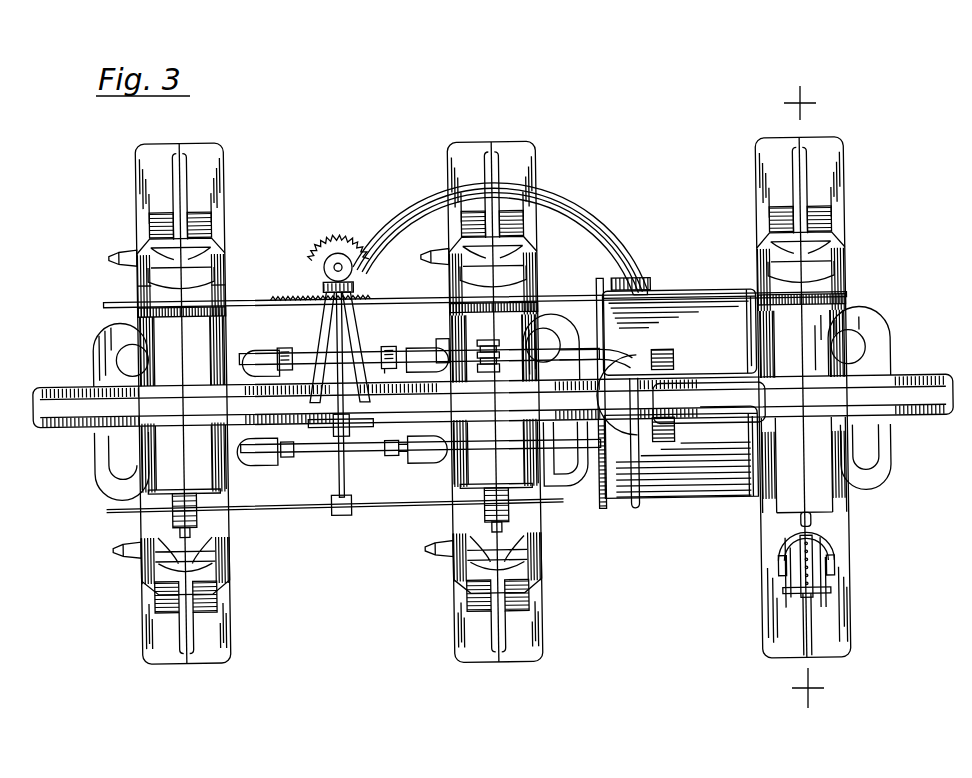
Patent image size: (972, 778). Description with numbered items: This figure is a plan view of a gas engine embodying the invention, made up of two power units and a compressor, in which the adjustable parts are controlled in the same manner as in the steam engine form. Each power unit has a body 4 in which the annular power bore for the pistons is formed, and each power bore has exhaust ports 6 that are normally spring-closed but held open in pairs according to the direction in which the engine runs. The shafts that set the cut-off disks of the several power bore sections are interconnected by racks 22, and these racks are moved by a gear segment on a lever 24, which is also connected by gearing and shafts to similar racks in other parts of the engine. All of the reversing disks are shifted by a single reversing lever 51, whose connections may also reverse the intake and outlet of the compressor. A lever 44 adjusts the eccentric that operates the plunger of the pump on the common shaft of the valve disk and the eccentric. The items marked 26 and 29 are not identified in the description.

The body 4 is at (207, 272).
The exhaust ports 6 is at (788, 397).
The racks 22 is at (390, 506).
The lever 24 is at (401, 452).
The valve fitting 26 is at (399, 345).
The wheel 29 is at (841, 177).
The lever 44 is at (840, 532).
The lever 51 is at (497, 352).